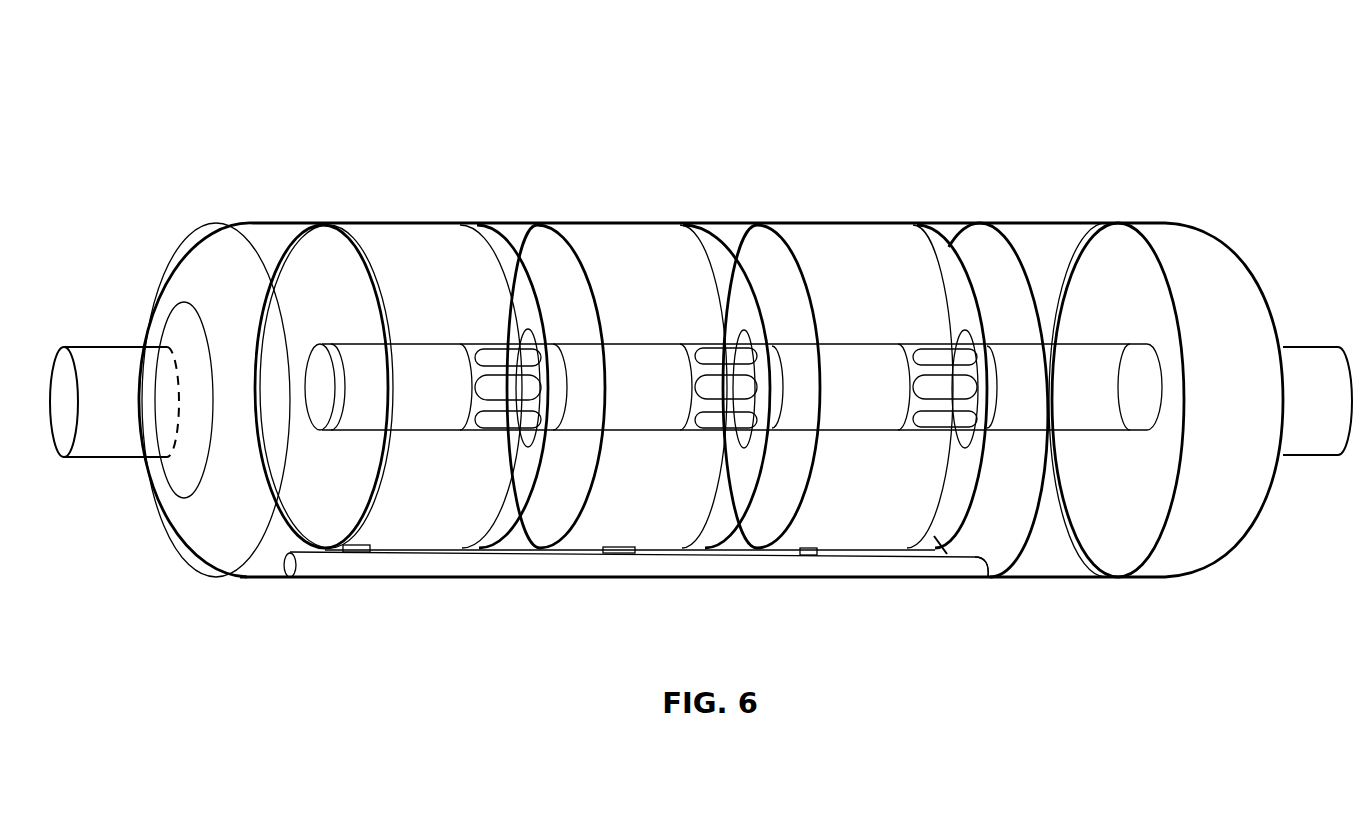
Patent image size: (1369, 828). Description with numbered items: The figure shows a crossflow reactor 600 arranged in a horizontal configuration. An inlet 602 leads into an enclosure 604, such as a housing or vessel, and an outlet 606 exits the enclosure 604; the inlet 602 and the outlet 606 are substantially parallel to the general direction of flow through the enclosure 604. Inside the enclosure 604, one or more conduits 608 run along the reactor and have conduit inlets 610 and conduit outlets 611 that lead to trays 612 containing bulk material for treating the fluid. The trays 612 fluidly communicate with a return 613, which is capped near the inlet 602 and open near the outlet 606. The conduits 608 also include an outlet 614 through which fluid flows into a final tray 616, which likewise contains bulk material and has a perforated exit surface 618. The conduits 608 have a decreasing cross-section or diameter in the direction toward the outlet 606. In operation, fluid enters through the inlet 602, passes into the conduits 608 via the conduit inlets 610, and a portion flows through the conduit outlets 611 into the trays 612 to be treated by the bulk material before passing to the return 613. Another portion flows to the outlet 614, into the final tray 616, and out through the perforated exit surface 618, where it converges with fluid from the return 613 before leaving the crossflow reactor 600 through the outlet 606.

The crossflow reactor 600 is at (196, 78).
The inlet 602 is at (105, 362).
The enclosure 604 is at (183, 530).
The outlet 606 is at (1297, 370).
The conduits 608 is at (530, 567).
The conduit inlets 610 is at (290, 566).
The conduit outlets 611 is at (363, 527).
The trays 612 is at (440, 238).
The return 613 is at (358, 375).
The outlet 614 is at (972, 567).
The final tray 616 is at (1063, 563).
The perforated exit surface 618 is at (1142, 542).